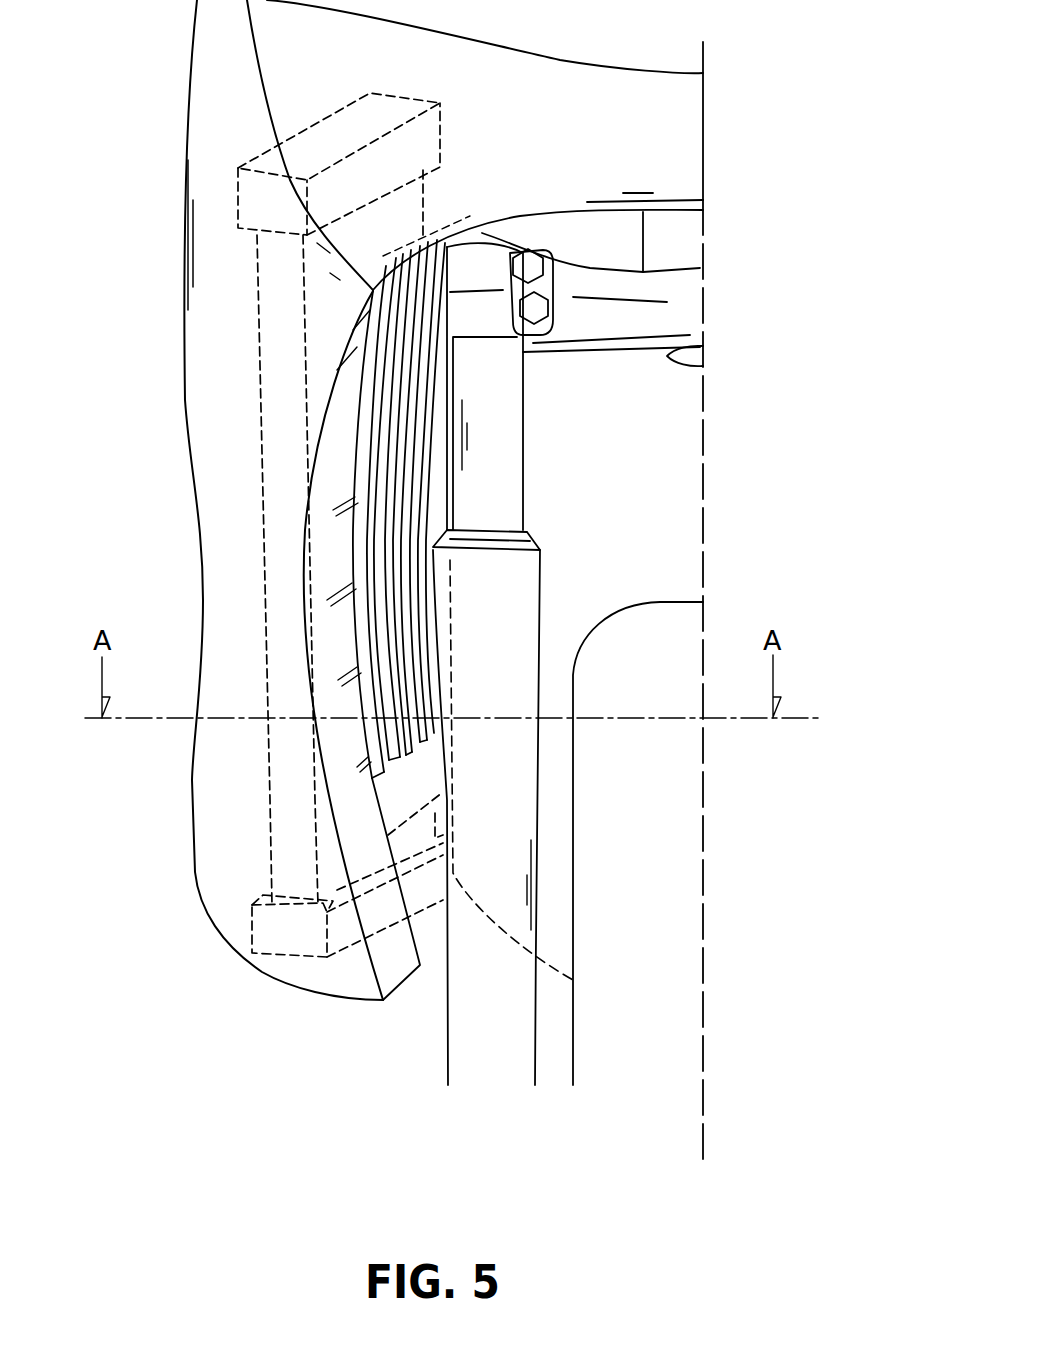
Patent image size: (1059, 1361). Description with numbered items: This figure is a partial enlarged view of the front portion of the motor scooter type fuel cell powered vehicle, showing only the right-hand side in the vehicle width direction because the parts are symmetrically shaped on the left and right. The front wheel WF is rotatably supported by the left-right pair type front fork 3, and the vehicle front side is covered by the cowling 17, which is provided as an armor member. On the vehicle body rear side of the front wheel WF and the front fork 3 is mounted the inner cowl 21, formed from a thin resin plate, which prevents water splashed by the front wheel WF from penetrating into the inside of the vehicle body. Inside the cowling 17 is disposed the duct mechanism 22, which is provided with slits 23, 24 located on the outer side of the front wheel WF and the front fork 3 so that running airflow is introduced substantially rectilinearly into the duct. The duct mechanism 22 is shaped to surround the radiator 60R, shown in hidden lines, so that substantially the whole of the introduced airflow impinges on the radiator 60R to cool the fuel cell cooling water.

The front fork 3 is at (450, 1033).
The cowling 17 is at (259, 400).
The inner cowl 21 is at (613, 413).
The duct mechanism 22 is at (430, 770).
The slit 23 is at (423, 615).
The slit 24 is at (380, 683).
The radiator 60R is at (340, 525).
The front wheel WF is at (577, 1030).